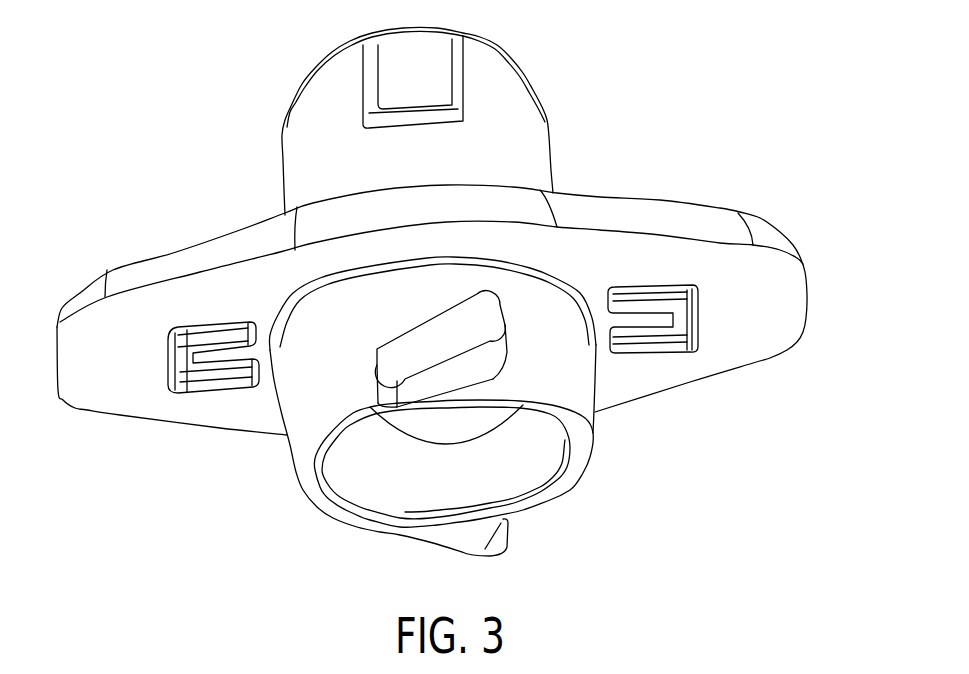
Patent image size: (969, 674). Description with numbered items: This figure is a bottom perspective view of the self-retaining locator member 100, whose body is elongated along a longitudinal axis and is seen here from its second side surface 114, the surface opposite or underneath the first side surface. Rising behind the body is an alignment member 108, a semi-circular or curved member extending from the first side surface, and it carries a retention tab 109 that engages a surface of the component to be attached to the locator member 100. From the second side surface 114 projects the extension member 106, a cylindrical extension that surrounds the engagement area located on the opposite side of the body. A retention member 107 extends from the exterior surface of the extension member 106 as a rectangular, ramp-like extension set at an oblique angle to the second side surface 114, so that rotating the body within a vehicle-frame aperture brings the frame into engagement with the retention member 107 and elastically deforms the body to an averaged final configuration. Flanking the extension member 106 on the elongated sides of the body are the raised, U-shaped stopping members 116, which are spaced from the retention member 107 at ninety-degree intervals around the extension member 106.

The self-retaining locator member 100 is at (132, 110).
The extension member 106 is at (297, 433).
The retention member 107 is at (453, 327).
The alignment member 108 is at (503, 123).
The retention tab 109 is at (417, 67).
The second side surface 114 is at (756, 323).
The stopping member 116 is at (168, 380).